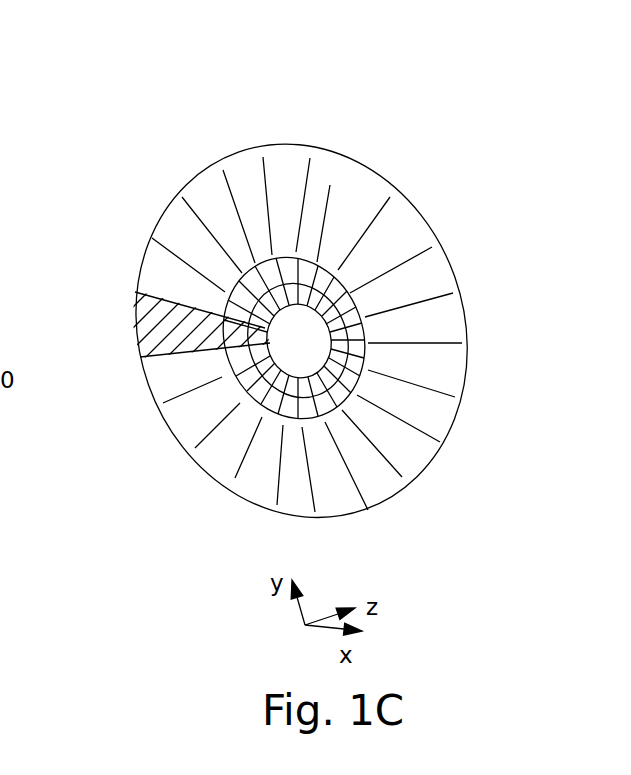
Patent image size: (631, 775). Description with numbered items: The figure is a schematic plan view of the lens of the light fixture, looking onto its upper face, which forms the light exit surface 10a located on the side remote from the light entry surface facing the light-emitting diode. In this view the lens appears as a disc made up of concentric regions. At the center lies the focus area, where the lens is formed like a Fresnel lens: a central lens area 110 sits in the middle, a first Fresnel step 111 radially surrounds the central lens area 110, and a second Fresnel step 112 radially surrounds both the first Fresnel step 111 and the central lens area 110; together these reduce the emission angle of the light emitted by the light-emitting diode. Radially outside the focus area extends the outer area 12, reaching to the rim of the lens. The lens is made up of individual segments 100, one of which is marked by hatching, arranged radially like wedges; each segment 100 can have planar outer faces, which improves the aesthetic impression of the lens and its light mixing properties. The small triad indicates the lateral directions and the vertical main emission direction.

The light exit surface 10a is at (348, 221).
The outer area 12 is at (182, 234).
The segment 100 is at (157, 329).
The central lens area 110 is at (292, 350).
The first Fresnel step 111 is at (323, 307).
The second Fresnel step 112 is at (268, 278).